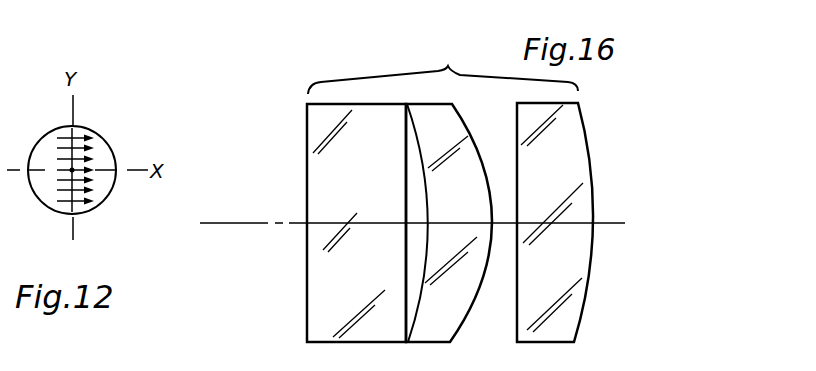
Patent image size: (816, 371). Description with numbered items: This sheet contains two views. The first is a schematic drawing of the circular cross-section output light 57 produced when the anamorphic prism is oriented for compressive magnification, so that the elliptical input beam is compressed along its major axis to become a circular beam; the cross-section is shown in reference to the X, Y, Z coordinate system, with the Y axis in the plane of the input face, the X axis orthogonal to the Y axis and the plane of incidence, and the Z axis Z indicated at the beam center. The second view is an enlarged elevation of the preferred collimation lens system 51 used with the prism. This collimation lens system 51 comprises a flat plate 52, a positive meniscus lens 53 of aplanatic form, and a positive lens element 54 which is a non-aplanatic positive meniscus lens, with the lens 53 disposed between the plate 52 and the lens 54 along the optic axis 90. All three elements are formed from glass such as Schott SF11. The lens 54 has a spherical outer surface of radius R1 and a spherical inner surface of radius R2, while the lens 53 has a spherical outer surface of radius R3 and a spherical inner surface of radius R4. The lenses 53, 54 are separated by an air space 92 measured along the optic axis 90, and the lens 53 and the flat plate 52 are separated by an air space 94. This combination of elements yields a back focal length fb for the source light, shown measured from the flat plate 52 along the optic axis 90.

In FIG. 12, the circular cross-section output light 57 is at (104, 131).
In FIG. 16, the collimation lens system 51 is at (443, 65).
In FIG. 16, the flat plate 52 is at (334, 342).
In FIG. 16, the positive meniscus lens 53 is at (432, 342).
In FIG. 16, the positive lens element 54 is at (560, 342).
In FIG. 16, the optic axis 90 is at (624, 221).
In FIG. 16, the air space 92 is at (499, 225).
In FIG. 16, the air space 94 is at (414, 232).
In FIG. 16, the radius of curvature of the spherical outer surface of the lens 54 R1 is at (582, 166).
In FIG. 16, the radius of curvature of the spherical inner surface of the lens 54 R2 is at (508, 119).
In FIG. 16, the radius of curvature of the spherical outer surface of the lens 53 R3 is at (460, 135).
In FIG. 16, the radius of curvature of the spherical inner surface of the lens 53 R4 is at (418, 187).
In FIG. 16, the back focal length fb is at (335, 256).
In FIG. 12, the Z axis Z is at (72, 172).